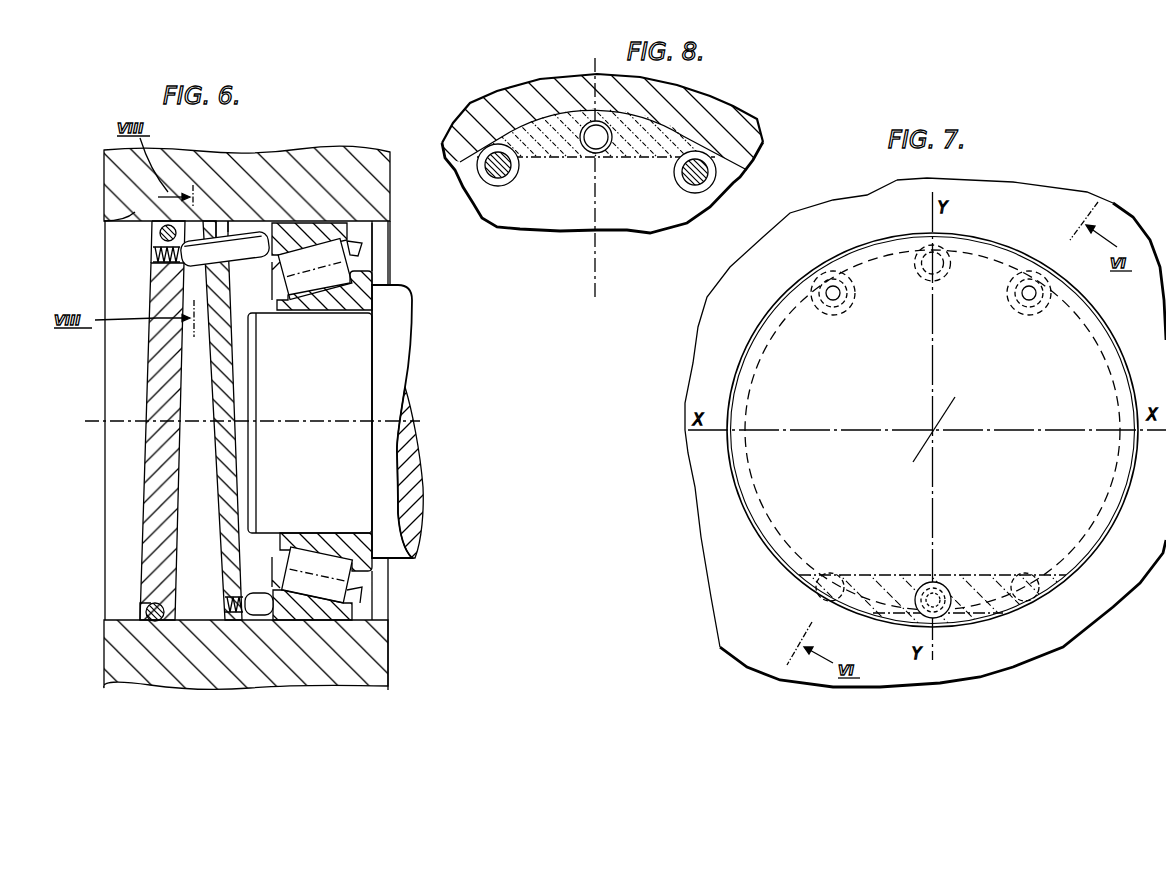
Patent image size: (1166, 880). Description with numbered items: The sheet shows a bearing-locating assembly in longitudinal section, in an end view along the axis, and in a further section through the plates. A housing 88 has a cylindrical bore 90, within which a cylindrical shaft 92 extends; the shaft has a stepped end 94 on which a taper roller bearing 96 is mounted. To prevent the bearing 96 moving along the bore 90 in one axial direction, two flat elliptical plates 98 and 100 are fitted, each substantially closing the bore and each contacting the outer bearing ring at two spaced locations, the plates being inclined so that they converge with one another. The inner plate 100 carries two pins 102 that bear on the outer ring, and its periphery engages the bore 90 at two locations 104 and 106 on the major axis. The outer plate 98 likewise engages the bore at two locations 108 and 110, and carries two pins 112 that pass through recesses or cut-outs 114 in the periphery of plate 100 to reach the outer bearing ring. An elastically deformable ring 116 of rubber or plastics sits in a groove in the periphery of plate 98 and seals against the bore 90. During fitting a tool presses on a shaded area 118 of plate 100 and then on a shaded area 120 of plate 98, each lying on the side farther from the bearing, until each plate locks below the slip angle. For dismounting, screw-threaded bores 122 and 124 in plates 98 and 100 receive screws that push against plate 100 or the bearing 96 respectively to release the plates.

In FIG. 6, the housing 88 is at (317, 167).
In FIG. 7, the housing 88 is at (1005, 187).
In FIG. 6, the cylindrical bore 90 is at (110, 228).
In FIG. 6, the cylindrical shaft 92 is at (385, 521).
In FIG. 6, the stepped end 94 is at (360, 386).
In FIG. 6, the taper roller bearing 96 is at (348, 318).
In FIG. 6, the flat elliptical plate 98 is at (154, 445).
In FIG. 6, the flat elliptical plate 100 is at (220, 468).
In FIG. 6, the projections 102 is at (262, 612).
In FIG. 7, the projections 102 is at (832, 586).
In FIG. 6, the location of engagement 104 is at (217, 223).
In FIG. 6, the location of engagement 106 is at (227, 625).
In FIG. 6, the location of engagement 108 is at (150, 222).
In FIG. 6, the location of engagement 110 is at (167, 625).
In FIG. 6, the projections 112 is at (195, 257).
In FIG. 8, the projections 112 is at (500, 173).
In FIG. 7, the projections 112 is at (833, 288).
In FIG. 6, the recesses or cut-outs 114 is at (232, 223).
In FIG. 8, the recesses or cut-outs 114 is at (493, 137).
In FIG. 7, the recesses or cut-outs 114 is at (808, 292).
In FIG. 6, the elastically deformable ring 116 is at (150, 606).
In FIG. 8, the shaded area 118 is at (628, 157).
In FIG. 7, the shaded area 120 is at (885, 587).
In FIG. 7, the screw-threaded bore 122 is at (938, 613).
In FIG. 8, the screw-threaded bore 124 is at (593, 136).
In FIG. 7, the screw-threaded bore 124 is at (925, 270).